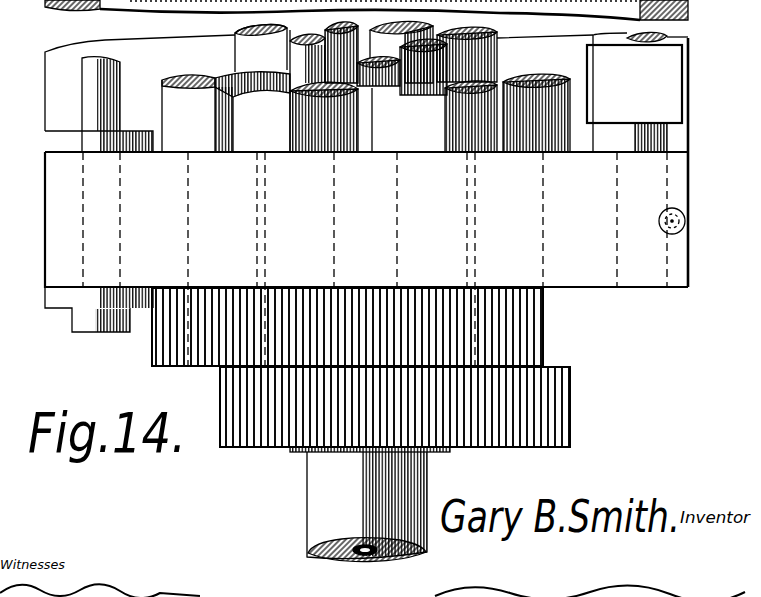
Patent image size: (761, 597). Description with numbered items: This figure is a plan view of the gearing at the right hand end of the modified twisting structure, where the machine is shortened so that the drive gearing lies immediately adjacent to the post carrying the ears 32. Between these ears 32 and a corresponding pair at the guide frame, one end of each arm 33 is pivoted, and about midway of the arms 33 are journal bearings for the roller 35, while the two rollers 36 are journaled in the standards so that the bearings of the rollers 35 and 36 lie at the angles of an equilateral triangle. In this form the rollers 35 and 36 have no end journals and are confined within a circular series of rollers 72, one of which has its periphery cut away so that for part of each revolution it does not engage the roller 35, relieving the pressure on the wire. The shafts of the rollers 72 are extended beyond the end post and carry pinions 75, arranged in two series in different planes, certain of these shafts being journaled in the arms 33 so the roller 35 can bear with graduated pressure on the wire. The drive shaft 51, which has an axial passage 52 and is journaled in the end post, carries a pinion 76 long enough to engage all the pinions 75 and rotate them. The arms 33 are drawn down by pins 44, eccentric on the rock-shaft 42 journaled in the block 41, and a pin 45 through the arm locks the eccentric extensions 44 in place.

The ears 32 is at (65, 297).
The arm 33 is at (366, 259).
The roller 35 is at (360, 72).
The rollers 36 is at (295, 53).
The block 41 is at (634, 84).
The rock-shaft 42 is at (660, 138).
The pins 44 is at (667, 182).
The pin 45 is at (686, 221).
The drive shaft 51 is at (325, 509).
The axial passage 52 is at (347, 571).
The rollers 72 is at (517, 142).
The pinions 75 is at (268, 420).
The pinion 76 is at (383, 440).